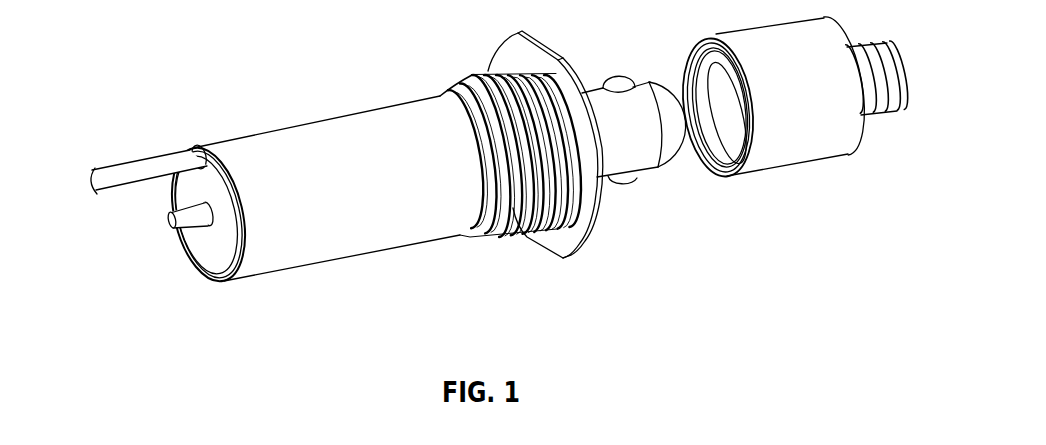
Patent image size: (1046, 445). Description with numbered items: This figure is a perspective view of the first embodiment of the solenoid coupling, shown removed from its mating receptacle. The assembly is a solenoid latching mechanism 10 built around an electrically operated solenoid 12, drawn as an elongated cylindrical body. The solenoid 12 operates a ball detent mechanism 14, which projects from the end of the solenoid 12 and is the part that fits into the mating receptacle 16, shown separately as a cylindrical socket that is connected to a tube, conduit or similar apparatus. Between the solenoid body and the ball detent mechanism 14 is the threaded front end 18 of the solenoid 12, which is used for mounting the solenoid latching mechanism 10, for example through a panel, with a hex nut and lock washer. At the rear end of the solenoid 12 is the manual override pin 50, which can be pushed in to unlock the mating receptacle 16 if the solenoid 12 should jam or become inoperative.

The solenoid latching mechanism 10 is at (441, 73).
The solenoid 12 is at (302, 133).
The ball detent mechanism 14 is at (620, 80).
The mating receptacle 16 is at (797, 157).
The threaded front end 18 is at (528, 230).
The manual override pin 50 is at (168, 219).